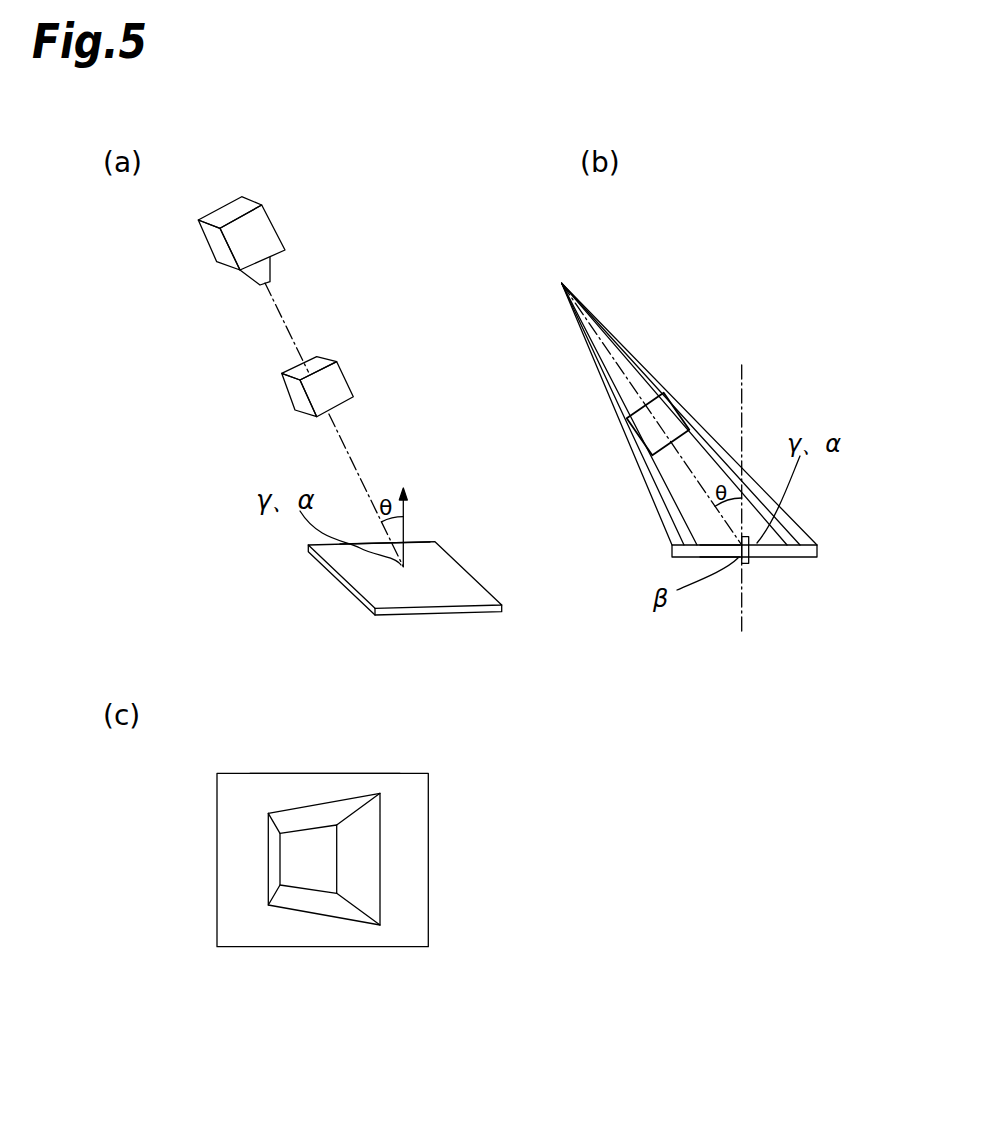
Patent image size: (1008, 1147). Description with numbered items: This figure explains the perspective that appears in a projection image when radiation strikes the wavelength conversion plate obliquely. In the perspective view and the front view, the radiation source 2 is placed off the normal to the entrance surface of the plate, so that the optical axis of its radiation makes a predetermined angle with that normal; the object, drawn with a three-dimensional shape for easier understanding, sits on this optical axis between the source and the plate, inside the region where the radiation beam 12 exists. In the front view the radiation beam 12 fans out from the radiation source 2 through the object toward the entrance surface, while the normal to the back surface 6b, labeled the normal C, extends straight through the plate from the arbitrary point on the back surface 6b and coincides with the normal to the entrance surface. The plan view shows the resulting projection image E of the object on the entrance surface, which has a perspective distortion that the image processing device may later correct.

The radiation source 2 is at (277, 228).
The normal to the back surface C is at (743, 625).
The radiation beam 12 is at (755, 482).
The back surface 6b is at (763, 558).
The projection image E is at (313, 805).